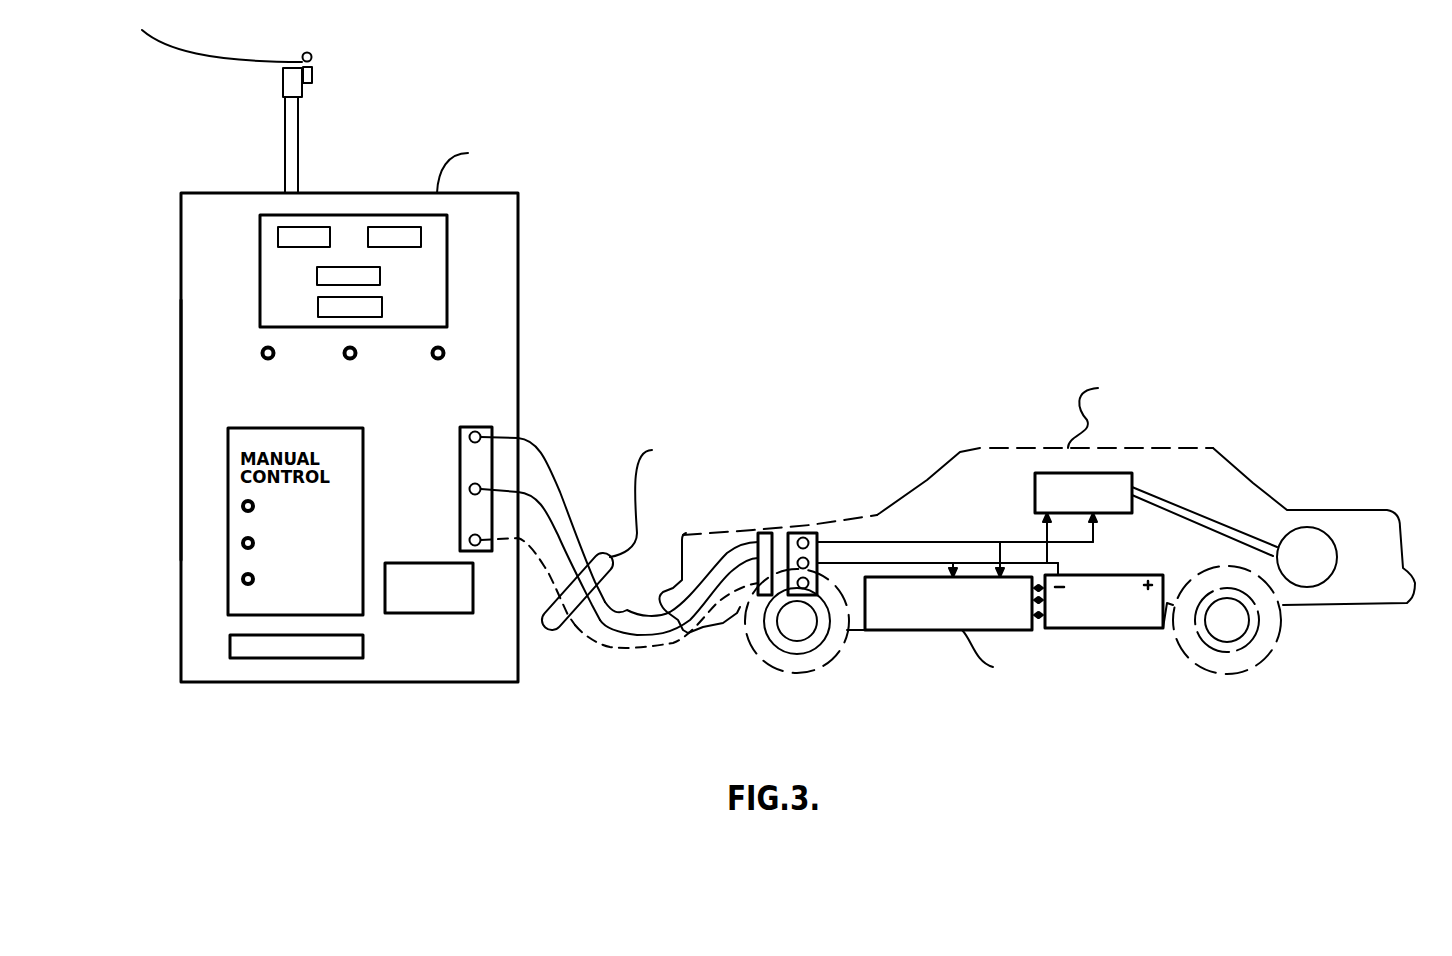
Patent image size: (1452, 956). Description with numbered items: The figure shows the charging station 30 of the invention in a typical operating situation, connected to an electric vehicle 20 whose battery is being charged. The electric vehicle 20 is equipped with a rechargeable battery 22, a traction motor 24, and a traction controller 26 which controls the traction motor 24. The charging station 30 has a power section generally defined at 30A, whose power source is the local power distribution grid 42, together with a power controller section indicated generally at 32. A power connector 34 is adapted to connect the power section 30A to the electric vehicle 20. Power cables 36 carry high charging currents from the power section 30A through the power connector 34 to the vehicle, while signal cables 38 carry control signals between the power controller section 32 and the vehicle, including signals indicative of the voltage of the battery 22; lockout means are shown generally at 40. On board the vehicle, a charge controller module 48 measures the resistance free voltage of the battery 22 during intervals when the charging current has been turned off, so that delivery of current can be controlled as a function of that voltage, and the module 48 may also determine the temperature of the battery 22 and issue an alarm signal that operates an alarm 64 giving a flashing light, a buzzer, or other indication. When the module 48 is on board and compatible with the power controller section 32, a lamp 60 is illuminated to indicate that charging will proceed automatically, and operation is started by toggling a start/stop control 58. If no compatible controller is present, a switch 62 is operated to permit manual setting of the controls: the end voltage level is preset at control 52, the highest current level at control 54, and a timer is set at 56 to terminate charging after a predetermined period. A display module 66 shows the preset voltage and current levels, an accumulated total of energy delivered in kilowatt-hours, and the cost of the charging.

The electric vehicle 20 is at (1197, 487).
The rechargeable battery 22 is at (1098, 575).
The traction motor 24 is at (1327, 552).
The traction controller 26 is at (1087, 473).
The charging station 30 is at (492, 298).
The power section 30A is at (168, 418).
The power controller section 32 is at (423, 602).
The power connector 34 is at (803, 537).
The power cables 36 is at (558, 533).
The signal cables 38 is at (588, 637).
The lockout means 40 is at (766, 650).
The local power distribution grid 42 is at (178, 52).
The charge controller module 48 is at (883, 629).
The end voltage control 52 is at (240, 503).
The current level control 54 is at (240, 542).
The timer 56 is at (228, 580).
The start/stop control 58 is at (357, 353).
The lamp 60 is at (445, 353).
The switch 62 is at (261, 353).
The alarm 64 is at (233, 642).
The display module 66 is at (267, 300).